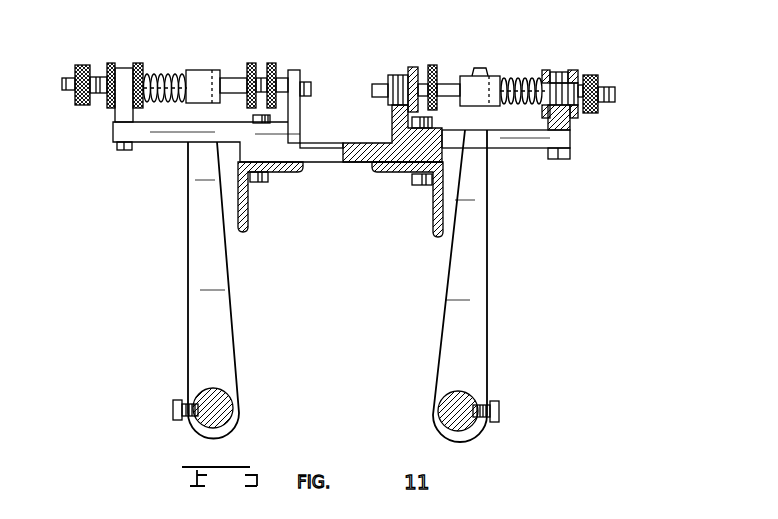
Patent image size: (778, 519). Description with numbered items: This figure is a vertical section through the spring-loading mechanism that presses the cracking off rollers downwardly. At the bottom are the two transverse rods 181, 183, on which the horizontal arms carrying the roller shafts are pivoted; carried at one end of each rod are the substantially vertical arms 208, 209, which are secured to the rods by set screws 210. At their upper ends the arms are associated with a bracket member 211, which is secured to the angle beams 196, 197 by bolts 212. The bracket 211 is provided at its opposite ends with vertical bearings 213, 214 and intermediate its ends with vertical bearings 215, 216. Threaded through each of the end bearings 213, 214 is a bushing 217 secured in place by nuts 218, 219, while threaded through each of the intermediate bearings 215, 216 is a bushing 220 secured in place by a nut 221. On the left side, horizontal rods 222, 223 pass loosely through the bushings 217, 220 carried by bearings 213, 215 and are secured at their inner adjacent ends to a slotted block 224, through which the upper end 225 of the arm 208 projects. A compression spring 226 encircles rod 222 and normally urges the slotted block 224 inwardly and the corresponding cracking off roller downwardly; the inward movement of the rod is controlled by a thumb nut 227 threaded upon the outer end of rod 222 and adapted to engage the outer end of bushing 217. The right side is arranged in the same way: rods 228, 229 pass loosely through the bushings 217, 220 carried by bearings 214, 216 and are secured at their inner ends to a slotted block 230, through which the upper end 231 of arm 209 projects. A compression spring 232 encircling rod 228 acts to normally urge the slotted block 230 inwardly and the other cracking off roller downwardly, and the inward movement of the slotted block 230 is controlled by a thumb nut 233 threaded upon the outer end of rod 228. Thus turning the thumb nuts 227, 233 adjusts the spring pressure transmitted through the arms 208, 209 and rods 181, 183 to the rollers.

The transverse rod 181 is at (200, 430).
The transverse rod 183 is at (438, 412).
The angle beam 196 is at (247, 198).
The angle beam 197 is at (392, 175).
The vertical arm 208 is at (188, 256).
The vertical arm 209 is at (485, 290).
The set screw 210 is at (172, 408).
The bracket member 211 is at (312, 142).
The bolt 212 is at (422, 186).
The vertical bearing 213 is at (126, 68).
The vertical bearing 214 is at (558, 72).
The vertical bearing 215 is at (294, 72).
The vertical bearing 216 is at (395, 75).
The bushing 217 is at (100, 77).
The nut 218 is at (113, 110).
The nut 219 is at (138, 63).
The bushing 220 is at (261, 78).
The nut 221 is at (282, 58).
The horizontal rod 222 is at (165, 75).
The horizontal rod 223 is at (250, 75).
The slotted block 224 is at (228, 78).
The upper end of arm 225 is at (202, 70).
The compression spring 226 is at (148, 105).
The thumb nut 227 is at (75, 67).
The rod 228 is at (504, 104).
The rod 229 is at (447, 86).
The slotted block 230 is at (492, 76).
The upper end of arm 231 is at (478, 68).
The compression spring 232 is at (518, 79).
The thumb nut 233 is at (598, 76).